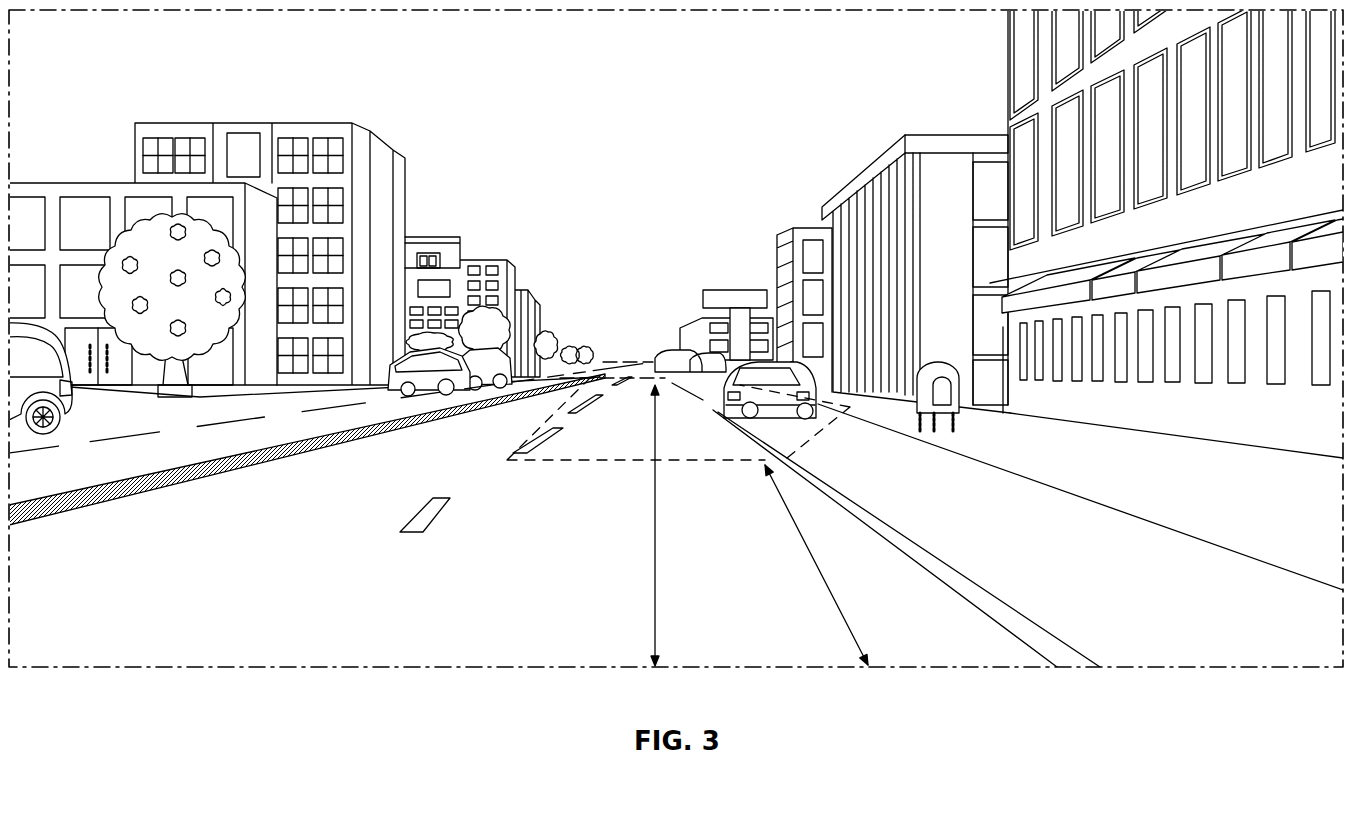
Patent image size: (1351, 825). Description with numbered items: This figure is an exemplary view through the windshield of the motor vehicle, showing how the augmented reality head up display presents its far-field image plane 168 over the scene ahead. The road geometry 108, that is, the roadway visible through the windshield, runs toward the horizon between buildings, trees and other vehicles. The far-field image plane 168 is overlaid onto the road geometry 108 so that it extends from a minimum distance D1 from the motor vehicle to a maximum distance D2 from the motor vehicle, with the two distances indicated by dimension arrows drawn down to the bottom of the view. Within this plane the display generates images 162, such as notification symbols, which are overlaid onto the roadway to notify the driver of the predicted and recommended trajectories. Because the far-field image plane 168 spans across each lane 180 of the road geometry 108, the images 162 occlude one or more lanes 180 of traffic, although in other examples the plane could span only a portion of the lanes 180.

The road geometry 108 is at (341, 516).
The images 162 is at (640, 446).
The far-field image plane 168 is at (640, 377).
The lanes 180 is at (153, 572).
The minimum distance D1 is at (815, 563).
The maximum distance D2 is at (653, 525).